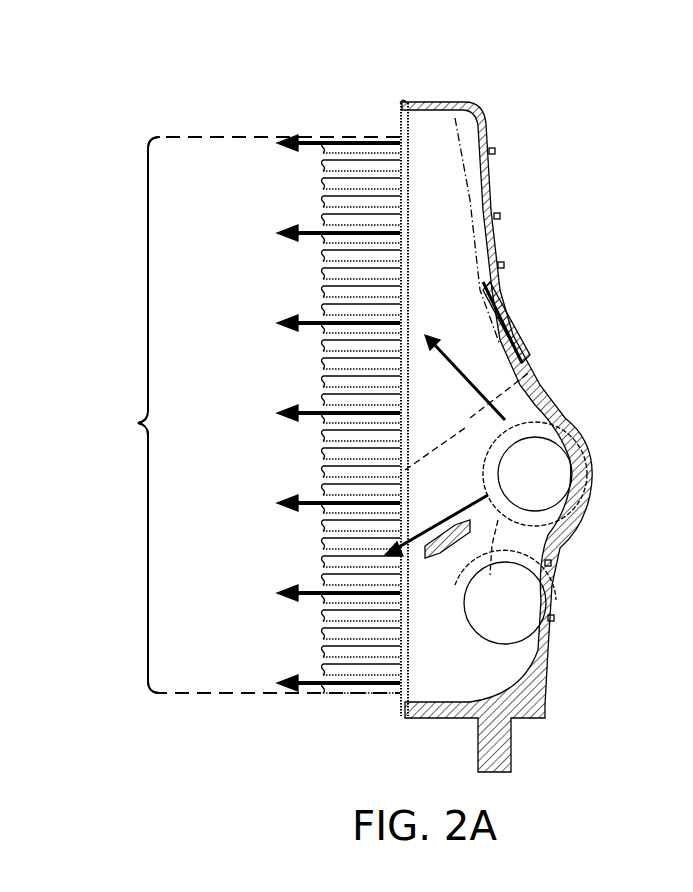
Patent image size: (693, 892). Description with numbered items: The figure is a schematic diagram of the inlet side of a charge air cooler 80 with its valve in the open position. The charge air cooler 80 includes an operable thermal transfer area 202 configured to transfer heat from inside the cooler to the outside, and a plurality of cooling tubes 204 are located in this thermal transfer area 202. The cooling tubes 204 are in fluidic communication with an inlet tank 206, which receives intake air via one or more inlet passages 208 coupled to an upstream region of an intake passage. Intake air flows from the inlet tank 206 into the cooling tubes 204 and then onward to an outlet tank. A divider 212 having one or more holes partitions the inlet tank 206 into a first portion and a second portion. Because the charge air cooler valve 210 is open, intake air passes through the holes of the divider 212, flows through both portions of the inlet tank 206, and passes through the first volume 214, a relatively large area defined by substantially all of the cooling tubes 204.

The charge air cooler 80 is at (367, 409).
The operable thermal transfer area 202 is at (329, 116).
The plurality of cooling tubes 204 is at (326, 211).
The inlet tank 206 is at (496, 222).
The inlet passages 208 is at (573, 462).
The charge air cooler valve 210 is at (508, 330).
The divider 212 is at (465, 425).
The first volume 214 is at (246, 414).